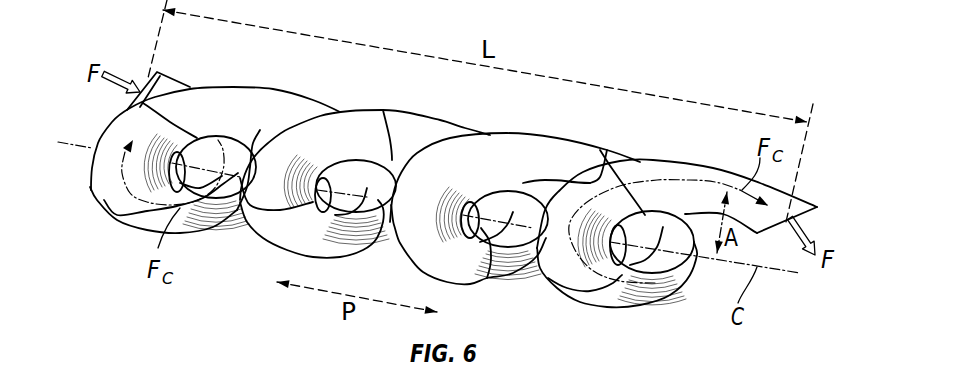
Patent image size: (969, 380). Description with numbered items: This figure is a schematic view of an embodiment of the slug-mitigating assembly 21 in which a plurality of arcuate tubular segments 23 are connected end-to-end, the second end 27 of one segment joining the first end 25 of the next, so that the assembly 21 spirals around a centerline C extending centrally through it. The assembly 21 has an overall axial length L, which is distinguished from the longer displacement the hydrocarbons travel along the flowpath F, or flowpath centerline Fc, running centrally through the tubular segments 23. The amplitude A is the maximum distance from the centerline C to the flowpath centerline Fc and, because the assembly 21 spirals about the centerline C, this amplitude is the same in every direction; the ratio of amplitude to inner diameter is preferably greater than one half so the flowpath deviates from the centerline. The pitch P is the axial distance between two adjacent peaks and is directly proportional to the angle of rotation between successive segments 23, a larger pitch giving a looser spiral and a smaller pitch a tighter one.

The slug-mitigating assembly 21 is at (741, 80).
The tubular segment 23 is at (265, 88).
The first end 25 is at (810, 213).
The second end 27 is at (641, 163).